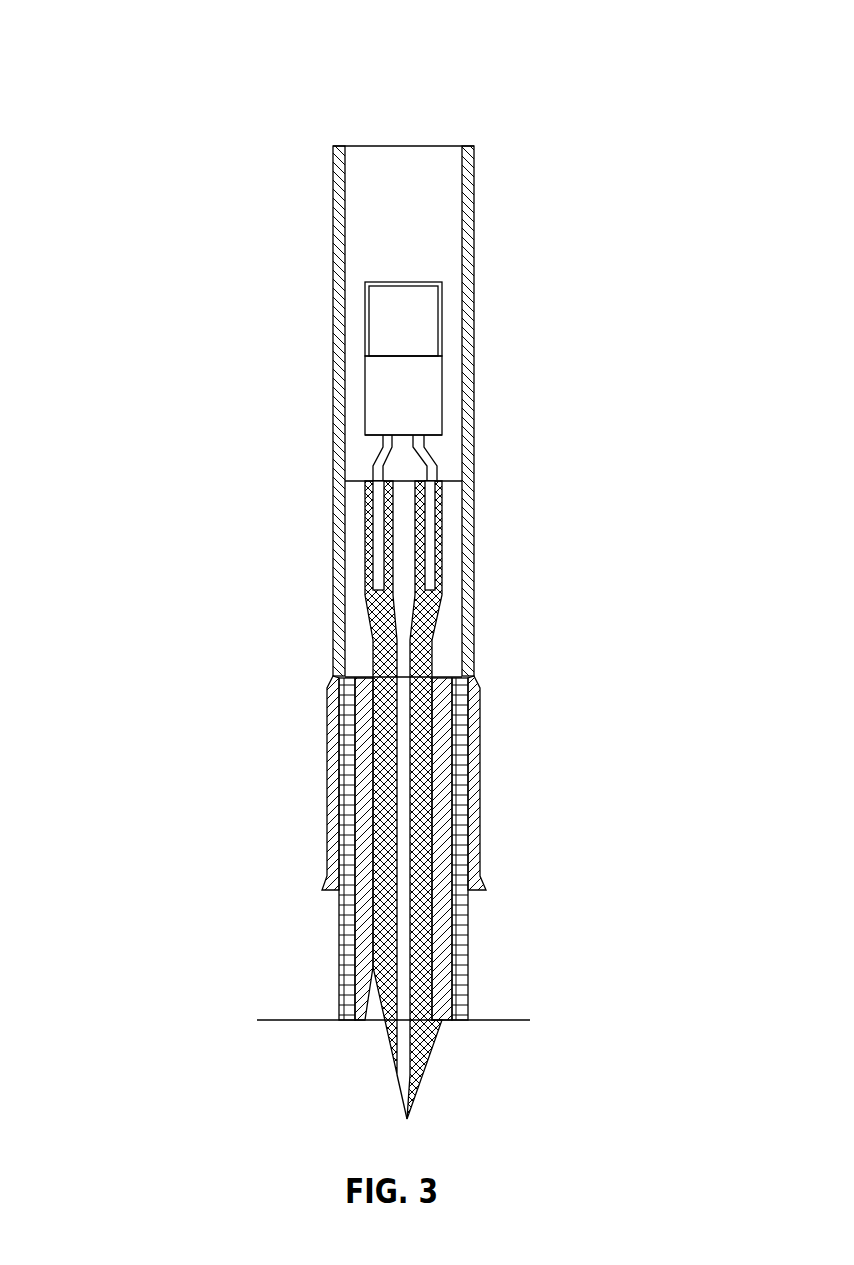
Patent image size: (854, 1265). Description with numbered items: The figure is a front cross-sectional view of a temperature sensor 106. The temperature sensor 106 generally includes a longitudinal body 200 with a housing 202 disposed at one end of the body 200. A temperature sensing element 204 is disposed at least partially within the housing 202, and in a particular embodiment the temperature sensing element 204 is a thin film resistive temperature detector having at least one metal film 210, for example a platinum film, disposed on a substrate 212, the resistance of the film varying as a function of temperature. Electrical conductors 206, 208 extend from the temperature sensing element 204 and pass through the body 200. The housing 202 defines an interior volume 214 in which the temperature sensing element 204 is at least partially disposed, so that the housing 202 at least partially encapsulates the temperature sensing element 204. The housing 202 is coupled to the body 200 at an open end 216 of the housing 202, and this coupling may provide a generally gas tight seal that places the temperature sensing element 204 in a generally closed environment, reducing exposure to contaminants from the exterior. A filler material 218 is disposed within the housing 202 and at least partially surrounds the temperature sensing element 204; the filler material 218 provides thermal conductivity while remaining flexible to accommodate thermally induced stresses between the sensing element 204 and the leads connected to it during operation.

The temperature sensor 106 is at (215, 100).
The longitudinal body 200 is at (467, 950).
The housing 202 is at (470, 308).
The temperature sensing element 204 is at (427, 303).
The electrical conductor 206 is at (378, 640).
The electrical conductor 208 is at (432, 630).
The metal film 210 is at (442, 378).
The substrate 212 is at (435, 417).
The interior volume 214 is at (362, 453).
The open end 216 is at (322, 890).
The filler material 218 is at (360, 265).